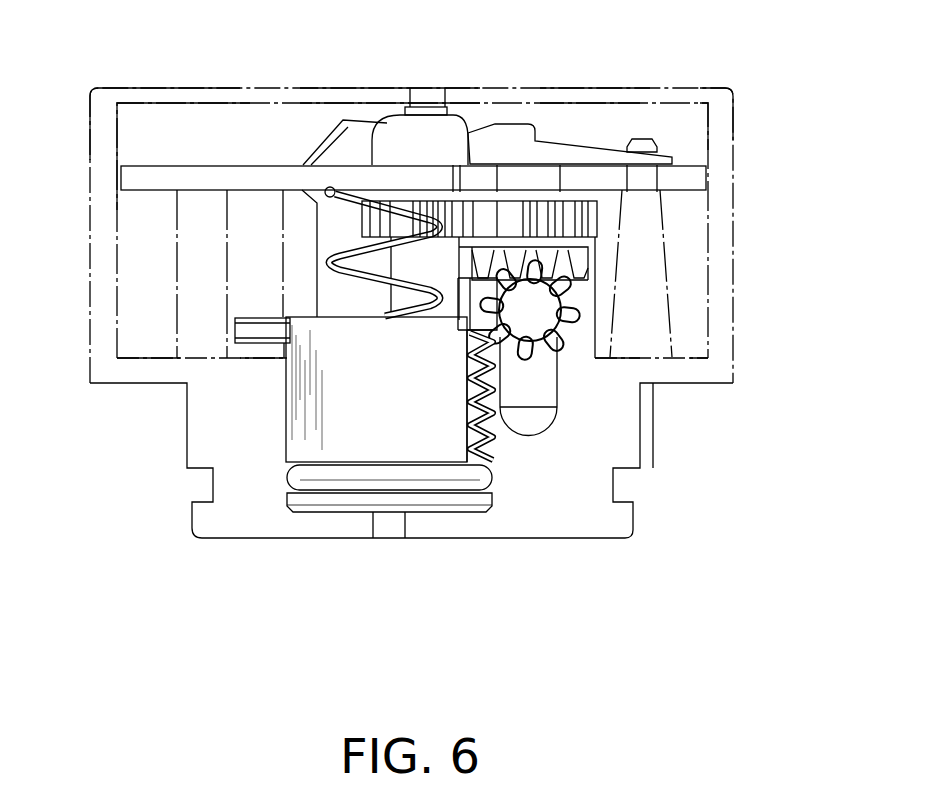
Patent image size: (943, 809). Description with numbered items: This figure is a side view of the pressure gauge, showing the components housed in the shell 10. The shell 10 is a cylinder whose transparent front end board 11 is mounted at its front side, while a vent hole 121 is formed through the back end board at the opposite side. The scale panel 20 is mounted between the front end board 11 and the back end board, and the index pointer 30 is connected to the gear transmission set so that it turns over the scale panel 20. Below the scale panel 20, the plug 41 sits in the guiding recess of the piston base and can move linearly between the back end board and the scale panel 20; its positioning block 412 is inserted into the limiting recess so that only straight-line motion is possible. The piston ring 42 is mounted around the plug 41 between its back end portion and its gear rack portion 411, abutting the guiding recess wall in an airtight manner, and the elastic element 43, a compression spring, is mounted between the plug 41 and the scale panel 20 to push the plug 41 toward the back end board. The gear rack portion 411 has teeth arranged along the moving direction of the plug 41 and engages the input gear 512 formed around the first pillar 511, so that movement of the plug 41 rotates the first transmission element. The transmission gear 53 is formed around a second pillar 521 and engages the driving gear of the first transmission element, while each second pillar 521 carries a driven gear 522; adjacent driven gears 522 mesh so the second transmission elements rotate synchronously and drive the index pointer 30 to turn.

The shell 10 is at (187, 445).
The front end board 11 is at (387, 92).
The vent hole 121 is at (373, 527).
The scale panel 20 is at (208, 175).
The index pointer 30 is at (533, 150).
The plug 41 is at (325, 417).
The gear rack portion 411 is at (482, 395).
The positioning block 412 is at (243, 330).
The piston ring 42 is at (450, 482).
The elastic element 43 is at (347, 255).
The first pillar 511 is at (548, 317).
The input gear 512 is at (523, 355).
The second pillar 521 is at (413, 262).
The driven gear 522 is at (345, 207).
The transmission gear 53 is at (563, 250).